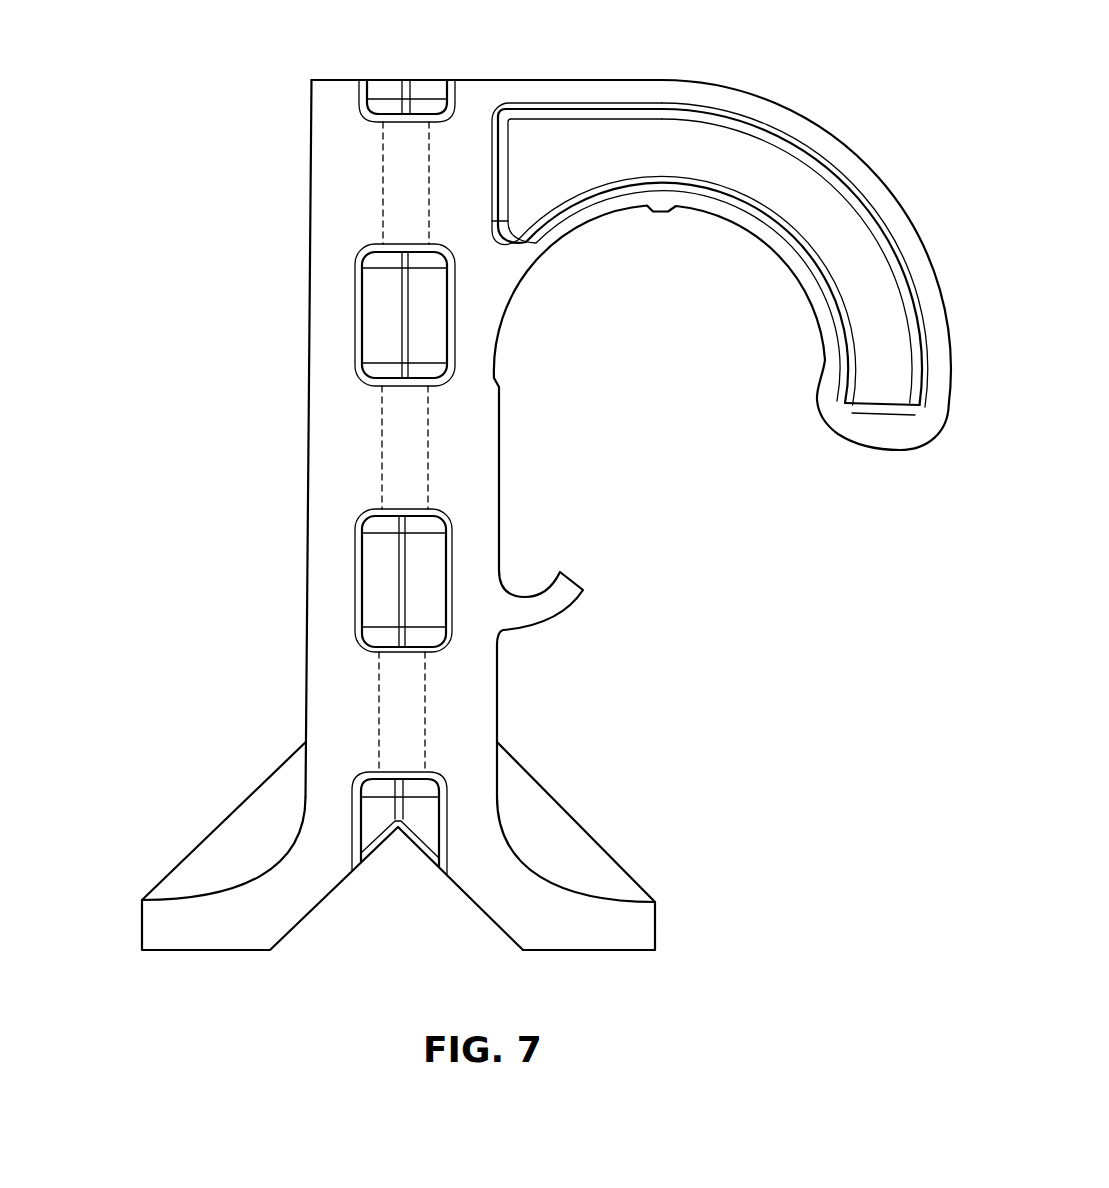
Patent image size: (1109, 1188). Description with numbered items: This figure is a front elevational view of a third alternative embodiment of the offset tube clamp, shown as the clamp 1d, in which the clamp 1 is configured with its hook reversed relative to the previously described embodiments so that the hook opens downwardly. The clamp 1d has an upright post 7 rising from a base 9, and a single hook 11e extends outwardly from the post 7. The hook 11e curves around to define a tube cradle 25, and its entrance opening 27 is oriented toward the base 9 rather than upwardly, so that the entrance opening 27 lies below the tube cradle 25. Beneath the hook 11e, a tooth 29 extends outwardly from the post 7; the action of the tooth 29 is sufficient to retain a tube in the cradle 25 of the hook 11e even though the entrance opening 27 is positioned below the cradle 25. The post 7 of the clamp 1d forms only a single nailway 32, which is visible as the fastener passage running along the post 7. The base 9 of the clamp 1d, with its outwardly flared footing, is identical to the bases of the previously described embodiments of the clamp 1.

The clamp 1 is at (118, 40).
The clamp 1d is at (298, 482).
The nailway 32 is at (310, 160).
The post 7 is at (308, 320).
The base 9 is at (580, 822).
The hook 11e is at (840, 147).
The cradle 25 is at (590, 222).
The entrance opening 27 is at (822, 357).
The tooth 29 is at (578, 600).